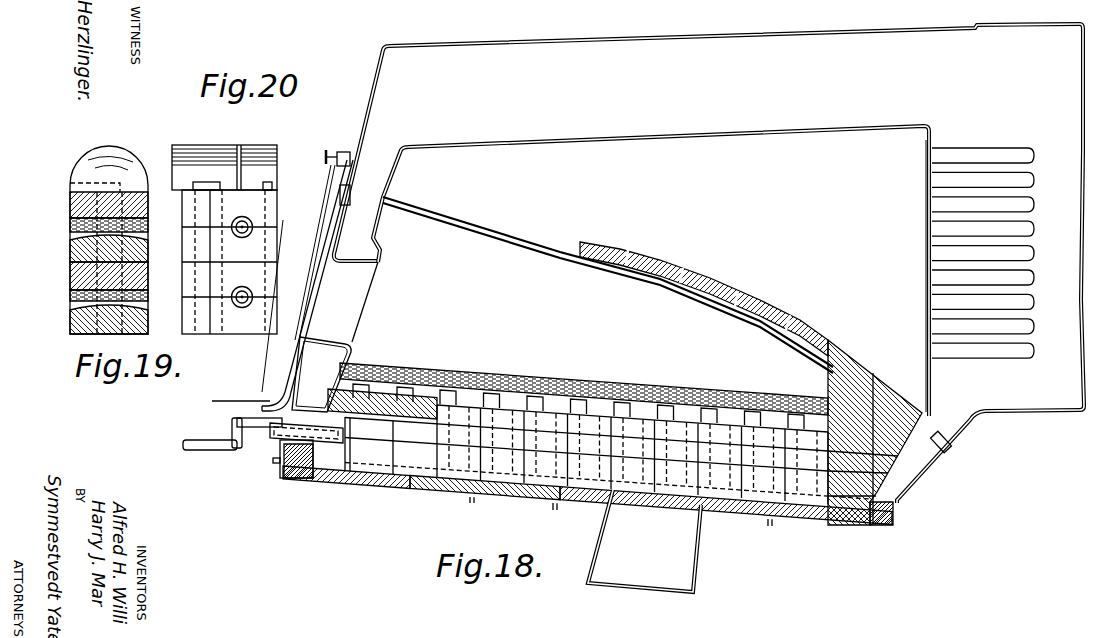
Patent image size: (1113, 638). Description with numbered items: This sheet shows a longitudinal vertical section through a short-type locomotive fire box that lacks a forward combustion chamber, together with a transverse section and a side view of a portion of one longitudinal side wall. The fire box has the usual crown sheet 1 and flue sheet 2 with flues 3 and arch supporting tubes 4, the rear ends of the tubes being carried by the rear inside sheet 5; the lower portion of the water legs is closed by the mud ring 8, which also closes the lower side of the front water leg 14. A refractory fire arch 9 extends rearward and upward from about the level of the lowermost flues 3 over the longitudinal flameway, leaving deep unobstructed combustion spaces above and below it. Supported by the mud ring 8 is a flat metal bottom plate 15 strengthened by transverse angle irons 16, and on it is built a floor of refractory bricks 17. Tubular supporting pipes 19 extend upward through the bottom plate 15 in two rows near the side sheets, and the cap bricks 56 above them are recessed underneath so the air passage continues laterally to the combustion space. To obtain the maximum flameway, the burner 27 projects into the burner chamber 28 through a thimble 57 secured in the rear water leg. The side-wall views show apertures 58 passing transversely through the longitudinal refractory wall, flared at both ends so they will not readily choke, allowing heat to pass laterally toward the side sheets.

In FIG. 18, the crown sheet 1 is at (692, 131).
In FIG. 18, the flue sheet 2 is at (925, 170).
In FIG. 18, the flues 3 is at (984, 152).
In FIG. 18, the arch supporting tubes 4 is at (538, 243).
In FIG. 18, the rear inside sheet 5 is at (388, 180).
In FIG. 18, the mud ring 8 is at (893, 512).
In FIG. 18, the arch 9 is at (670, 269).
In FIG. 18, the front water leg 14 is at (940, 457).
In FIG. 18, the bottom plate 15 is at (324, 482).
In FIG. 18, the transverse angle irons 16 is at (375, 488).
In FIG. 18, the refractory bricks 17 is at (498, 488).
In FIG. 20, the tubular supporting pipes 19 is at (222, 117).
In FIG. 18, the tubular supporting pipes 19 is at (788, 484).
In FIG. 18, the burner 27 is at (283, 466).
In FIG. 18, the burner chamber 28 is at (353, 425).
In FIG. 18, the cap bricks 56 is at (540, 379).
In FIG. 18, the thimble 57 is at (321, 374).
In FIG. 19, the apertures 58 is at (72, 228).
In FIG. 20, the apertures 58 is at (251, 222).